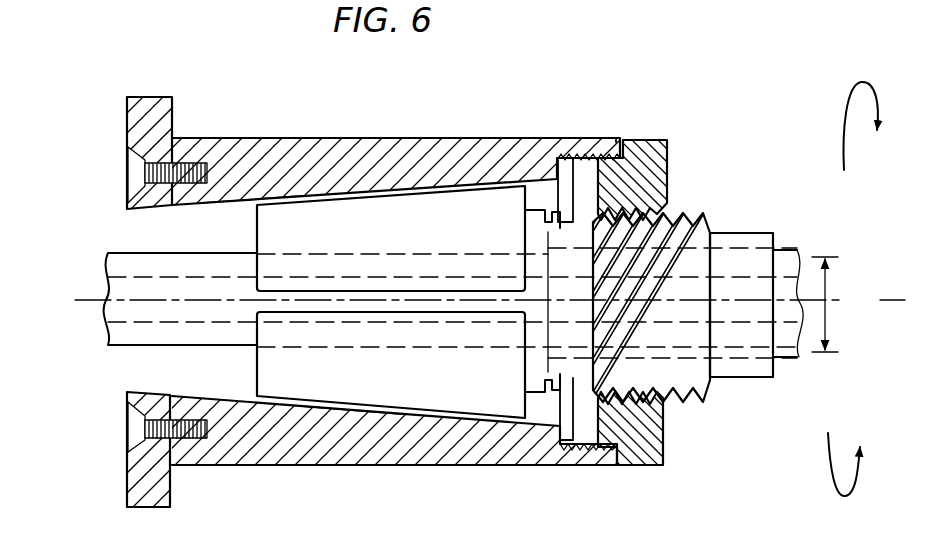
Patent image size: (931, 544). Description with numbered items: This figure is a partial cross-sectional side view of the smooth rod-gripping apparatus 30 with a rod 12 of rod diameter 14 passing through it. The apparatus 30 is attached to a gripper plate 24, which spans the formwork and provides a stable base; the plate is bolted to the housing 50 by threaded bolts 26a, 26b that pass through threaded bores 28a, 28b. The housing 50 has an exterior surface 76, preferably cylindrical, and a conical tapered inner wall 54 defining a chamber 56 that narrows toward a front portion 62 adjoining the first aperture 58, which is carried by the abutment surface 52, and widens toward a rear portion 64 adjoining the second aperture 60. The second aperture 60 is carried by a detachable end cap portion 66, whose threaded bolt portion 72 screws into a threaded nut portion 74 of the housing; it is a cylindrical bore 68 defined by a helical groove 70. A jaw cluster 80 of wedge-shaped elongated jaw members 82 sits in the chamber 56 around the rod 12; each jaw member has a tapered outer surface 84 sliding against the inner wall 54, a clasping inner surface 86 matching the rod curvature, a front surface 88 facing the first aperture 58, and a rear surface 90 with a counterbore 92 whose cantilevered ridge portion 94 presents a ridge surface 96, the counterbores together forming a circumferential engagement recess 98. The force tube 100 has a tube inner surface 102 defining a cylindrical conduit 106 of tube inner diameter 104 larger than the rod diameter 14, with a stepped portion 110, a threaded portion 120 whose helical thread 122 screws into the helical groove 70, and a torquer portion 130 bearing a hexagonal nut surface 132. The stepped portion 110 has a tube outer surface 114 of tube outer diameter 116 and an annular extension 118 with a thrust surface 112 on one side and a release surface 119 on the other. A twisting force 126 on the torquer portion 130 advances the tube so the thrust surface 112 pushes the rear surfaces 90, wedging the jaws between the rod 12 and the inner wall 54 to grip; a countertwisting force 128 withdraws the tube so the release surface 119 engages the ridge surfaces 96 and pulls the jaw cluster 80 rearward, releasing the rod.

The rod 12 is at (798, 262).
The rod diameter 14 is at (845, 304).
The gripper plate 24 is at (137, 479).
The threaded bolt 26a is at (127, 176).
The threaded bolt 26b is at (126, 418).
The threaded bore 28a is at (138, 211).
The threaded bore 28b is at (140, 445).
The smooth rod-gripping apparatus 30 is at (202, 479).
The housing 50 is at (286, 444).
The abutment surface 52 is at (170, 143).
The tapered inner wall 54 is at (249, 216).
The chamber 56 is at (199, 232).
The first aperture 58 is at (112, 242).
The second aperture 60 is at (730, 252).
The front portion 62 is at (160, 368).
The rear portion 64 is at (595, 433).
The end cap portion 66 is at (667, 141).
The cylindrical bore 68 is at (664, 420).
The helical groove 70 is at (641, 410).
The threaded bolt portion 72 is at (652, 163).
The threaded nut portion 74 is at (602, 141).
The exterior surface 76 is at (308, 150).
The jaw cluster 80 is at (244, 198).
The elongated jaw member 82 is at (343, 261).
The tapered outer surface 84 is at (386, 255).
The clasping inner surface 86 is at (393, 253).
The front surface 88 is at (256, 363).
The rear surface 90 is at (537, 226).
The counterbore 92 is at (562, 203).
The cantilevered ridge portion 94 is at (570, 213).
The ridge surface 96 is at (557, 206).
The circumferential engagement recess 98 is at (521, 243).
The force tube 100 is at (720, 404).
The tube inner surface 102 is at (776, 250).
The tube inner diameter 104 is at (788, 359).
The cylindrical conduit 106 is at (763, 247).
The stepped portion 110 is at (524, 348).
The thrust surface 112 is at (548, 335).
The tube outer surface 114 is at (613, 453).
The tube outer diameter 116 is at (535, 379).
The annular extension 118 is at (548, 372).
The release surface 119 is at (585, 378).
The threaded portion 120 is at (644, 240).
The helical thread 122 is at (731, 204).
The twisting force 126 is at (855, 92).
The countertwisting force 128 is at (831, 468).
The torquer portion 130 is at (723, 342).
The hexagonal nut surface 132 is at (753, 378).